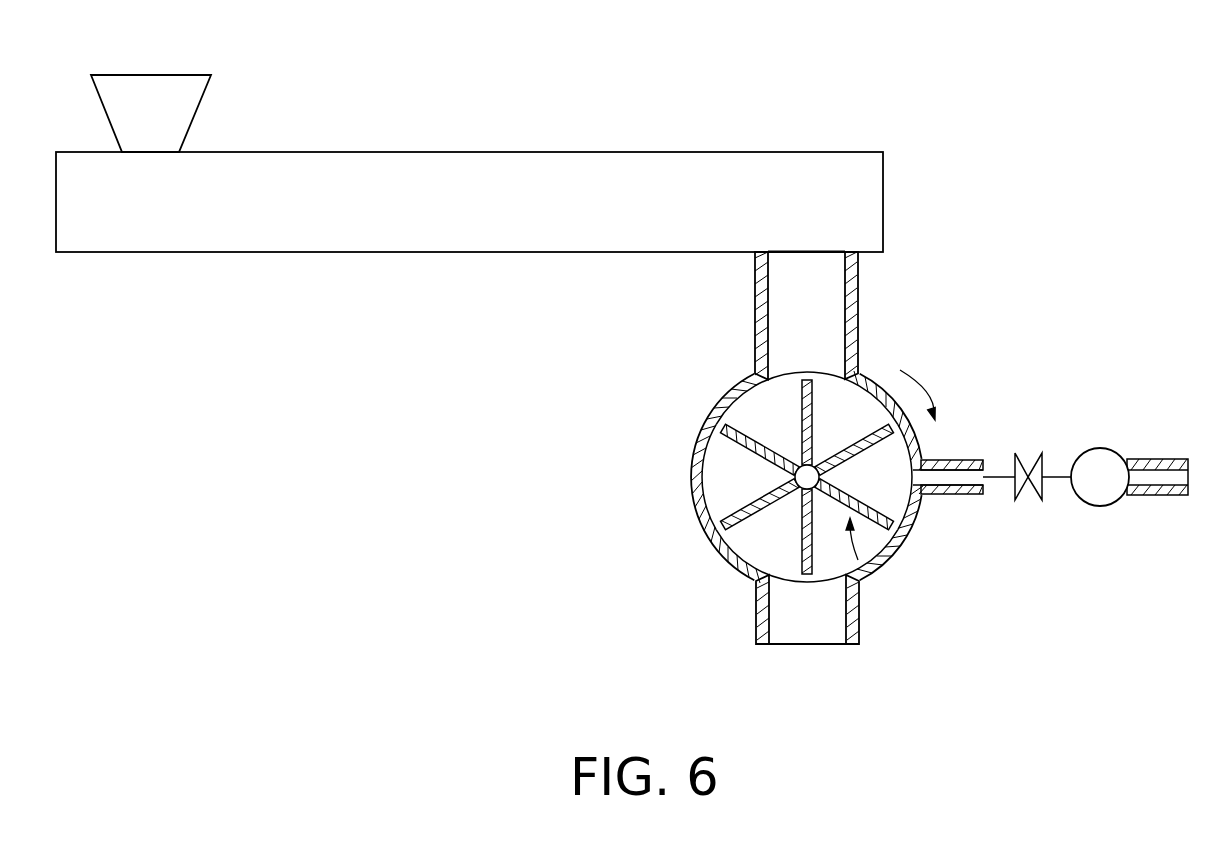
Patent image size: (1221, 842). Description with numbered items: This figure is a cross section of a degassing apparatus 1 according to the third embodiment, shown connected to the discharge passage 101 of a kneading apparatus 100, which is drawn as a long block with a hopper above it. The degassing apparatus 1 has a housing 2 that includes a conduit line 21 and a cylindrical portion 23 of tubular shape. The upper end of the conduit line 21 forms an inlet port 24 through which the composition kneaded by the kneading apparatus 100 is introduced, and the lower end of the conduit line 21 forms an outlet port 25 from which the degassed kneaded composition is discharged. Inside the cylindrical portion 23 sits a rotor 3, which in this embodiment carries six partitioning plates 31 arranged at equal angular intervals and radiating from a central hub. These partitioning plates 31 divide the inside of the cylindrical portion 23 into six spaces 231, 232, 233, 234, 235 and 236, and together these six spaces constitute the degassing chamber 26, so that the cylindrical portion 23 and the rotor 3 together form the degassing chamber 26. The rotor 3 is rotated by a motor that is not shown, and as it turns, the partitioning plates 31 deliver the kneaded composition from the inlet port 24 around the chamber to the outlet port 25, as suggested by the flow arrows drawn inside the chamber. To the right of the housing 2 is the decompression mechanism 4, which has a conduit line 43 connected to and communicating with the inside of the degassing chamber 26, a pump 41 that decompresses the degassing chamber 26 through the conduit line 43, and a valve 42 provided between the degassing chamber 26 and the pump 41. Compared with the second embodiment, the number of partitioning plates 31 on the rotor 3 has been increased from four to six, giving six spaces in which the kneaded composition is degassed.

The kneading apparatus 100 is at (328, 110).
The discharge passage 101 is at (807, 252).
The degassing apparatus 1 is at (976, 345).
The housing 2 is at (666, 463).
The conduit line 21 is at (757, 310).
The cylindrical portion 23 is at (695, 497).
The inlet port 24 is at (790, 252).
The outlet port 25 is at (805, 645).
The degassing chamber 26 is at (697, 437).
The space 231 is at (842, 417).
The space 232 is at (883, 493).
The space 233 is at (850, 550).
The space 234 is at (780, 548).
The space 235 is at (737, 487).
The space 236 is at (767, 415).
The rotor 3 is at (804, 504).
The partitioning plate 31 is at (815, 395).
The decompression mechanism 4 is at (1071, 427).
The pump 41 is at (1106, 448).
The valve 42 is at (1028, 452).
The conduit line 43 is at (960, 492).